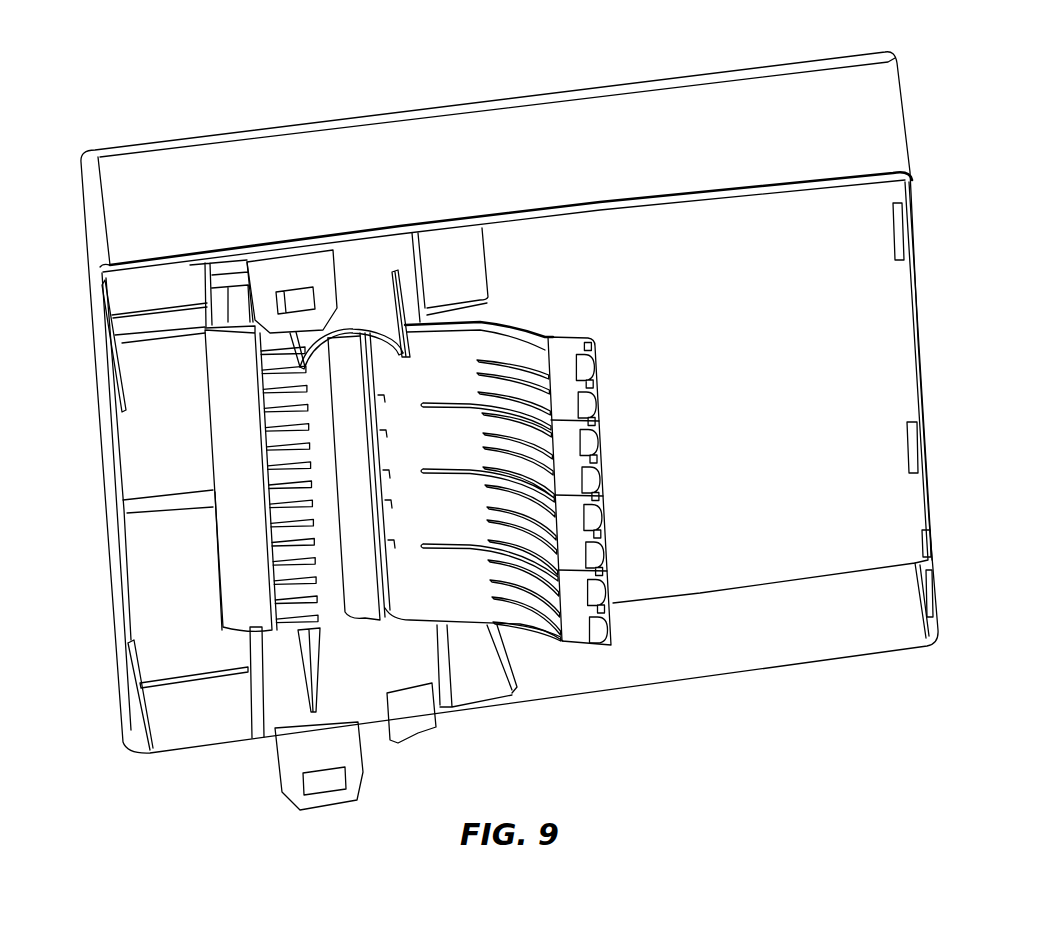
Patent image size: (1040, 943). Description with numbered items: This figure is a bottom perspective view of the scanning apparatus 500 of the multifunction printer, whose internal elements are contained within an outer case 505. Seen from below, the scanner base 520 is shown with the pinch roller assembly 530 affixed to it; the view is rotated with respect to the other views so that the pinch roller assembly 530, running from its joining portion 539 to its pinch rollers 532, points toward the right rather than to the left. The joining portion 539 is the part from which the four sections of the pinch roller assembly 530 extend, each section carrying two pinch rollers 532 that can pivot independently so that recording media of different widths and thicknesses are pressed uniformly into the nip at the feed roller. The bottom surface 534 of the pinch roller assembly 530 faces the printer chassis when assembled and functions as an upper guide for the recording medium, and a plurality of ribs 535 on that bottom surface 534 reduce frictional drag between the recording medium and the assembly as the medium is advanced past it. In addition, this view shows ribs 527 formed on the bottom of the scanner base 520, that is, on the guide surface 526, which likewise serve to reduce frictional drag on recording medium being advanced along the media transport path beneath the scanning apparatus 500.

The scanning apparatus 500 is at (112, 100).
The outer case 505 is at (510, 112).
The scanner base 520 is at (866, 343).
The guide surface 526 is at (287, 697).
The ribs 527 is at (285, 420).
The pinch roller assembly 530 is at (608, 335).
The pinch rollers 532 is at (605, 588).
The bottom surface 534 is at (537, 358).
The ribs 535 is at (500, 360).
The joining portion 539 is at (437, 587).